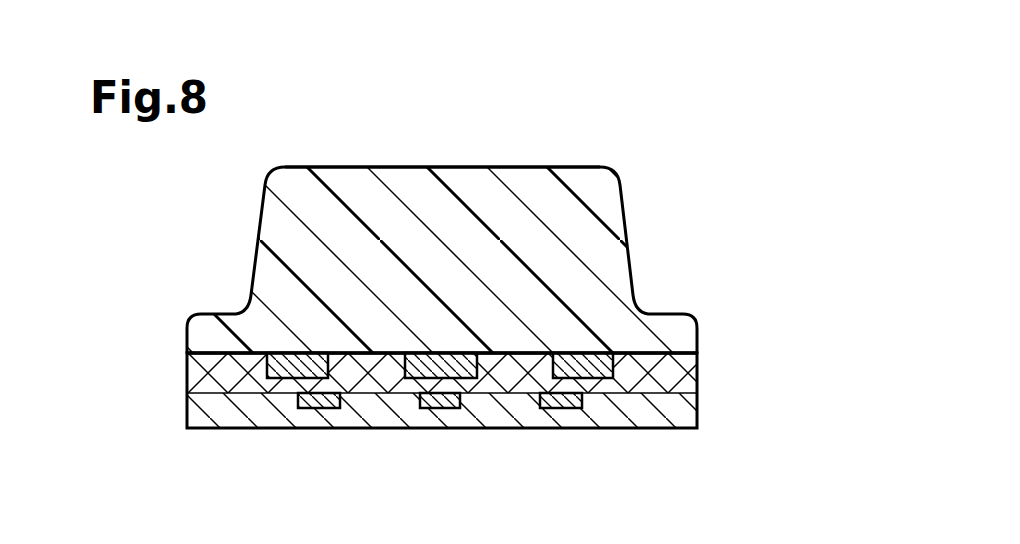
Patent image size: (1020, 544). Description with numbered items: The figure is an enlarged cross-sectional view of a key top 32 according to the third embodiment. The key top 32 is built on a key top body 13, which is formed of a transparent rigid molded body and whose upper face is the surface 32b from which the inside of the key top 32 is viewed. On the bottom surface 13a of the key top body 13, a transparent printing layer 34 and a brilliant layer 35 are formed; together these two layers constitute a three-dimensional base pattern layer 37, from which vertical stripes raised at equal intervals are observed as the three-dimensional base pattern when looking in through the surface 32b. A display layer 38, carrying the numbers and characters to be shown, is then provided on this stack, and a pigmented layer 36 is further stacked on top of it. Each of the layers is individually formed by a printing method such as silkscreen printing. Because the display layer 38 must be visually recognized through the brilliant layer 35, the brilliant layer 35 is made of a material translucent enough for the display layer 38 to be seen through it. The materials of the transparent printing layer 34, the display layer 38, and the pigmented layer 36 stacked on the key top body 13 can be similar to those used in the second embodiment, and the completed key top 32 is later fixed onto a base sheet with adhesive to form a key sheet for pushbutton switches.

The key top body 13 is at (527, 167).
The bottom surface 13a is at (663, 372).
The key top 32 is at (410, 279).
The surface 32b is at (390, 167).
The transparent printing layer 34 is at (228, 372).
The brilliant layer 35 is at (187, 376).
The pigmented layer 36 is at (187, 406).
The three-dimensional base pattern layer 37 is at (355, 417).
The display layer 38 is at (322, 409).